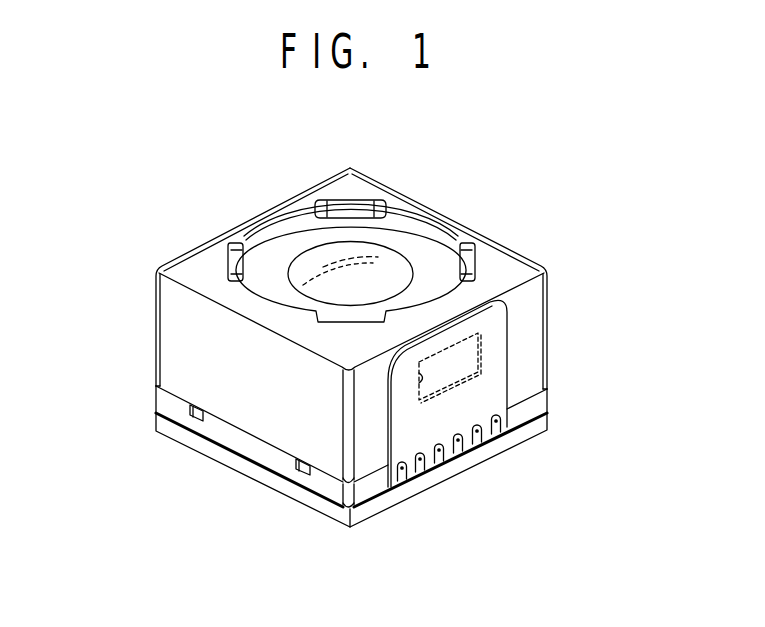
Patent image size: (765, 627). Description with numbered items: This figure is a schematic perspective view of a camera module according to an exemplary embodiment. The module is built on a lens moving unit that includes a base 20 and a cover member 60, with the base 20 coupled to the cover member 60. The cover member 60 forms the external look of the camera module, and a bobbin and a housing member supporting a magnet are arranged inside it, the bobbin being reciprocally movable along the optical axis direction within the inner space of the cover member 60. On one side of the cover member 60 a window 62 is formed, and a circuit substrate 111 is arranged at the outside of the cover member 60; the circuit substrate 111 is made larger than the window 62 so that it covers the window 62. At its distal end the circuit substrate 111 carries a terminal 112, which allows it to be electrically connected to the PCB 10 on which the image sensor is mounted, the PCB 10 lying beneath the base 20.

The PCB 10 is at (205, 448).
The base 20 is at (177, 406).
The cover member 60 is at (185, 340).
The window 62 is at (418, 382).
The circuit substrate 111 is at (490, 395).
The terminal 112 is at (413, 480).